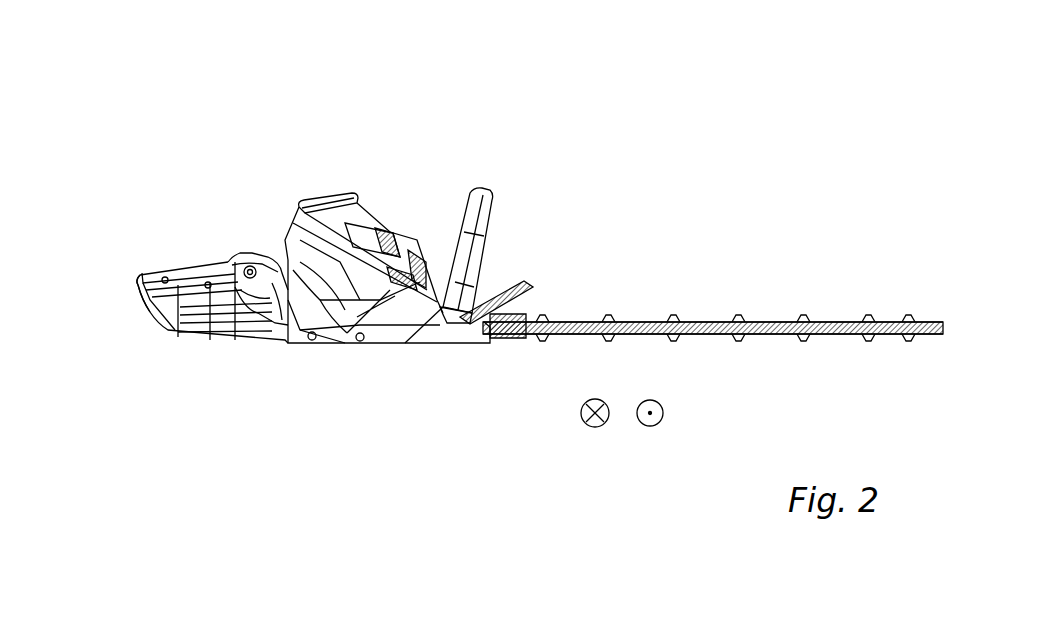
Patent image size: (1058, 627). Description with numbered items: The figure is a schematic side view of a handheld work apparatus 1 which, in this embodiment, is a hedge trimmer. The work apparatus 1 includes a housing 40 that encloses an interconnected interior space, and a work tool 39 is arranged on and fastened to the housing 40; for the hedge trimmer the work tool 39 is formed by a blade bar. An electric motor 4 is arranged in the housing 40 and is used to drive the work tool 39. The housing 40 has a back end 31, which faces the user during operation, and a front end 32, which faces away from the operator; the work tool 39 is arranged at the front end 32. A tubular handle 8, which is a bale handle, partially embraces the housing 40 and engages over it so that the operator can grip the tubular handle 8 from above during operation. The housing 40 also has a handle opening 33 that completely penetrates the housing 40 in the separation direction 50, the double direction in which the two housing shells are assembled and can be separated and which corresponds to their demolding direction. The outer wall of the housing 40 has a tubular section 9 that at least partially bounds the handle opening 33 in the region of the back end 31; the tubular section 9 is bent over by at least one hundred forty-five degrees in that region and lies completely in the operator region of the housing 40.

The handheld work apparatus 1 is at (745, 92).
The electric motor 4 is at (353, 310).
The tubular handle 8 is at (494, 200).
The tubular section 9 is at (170, 272).
The back end 31 is at (128, 283).
The front end 32 is at (512, 308).
The handle opening 33 is at (207, 318).
The work tool 39 is at (768, 323).
The housing 40 is at (372, 203).
The separation direction 50 is at (601, 427).